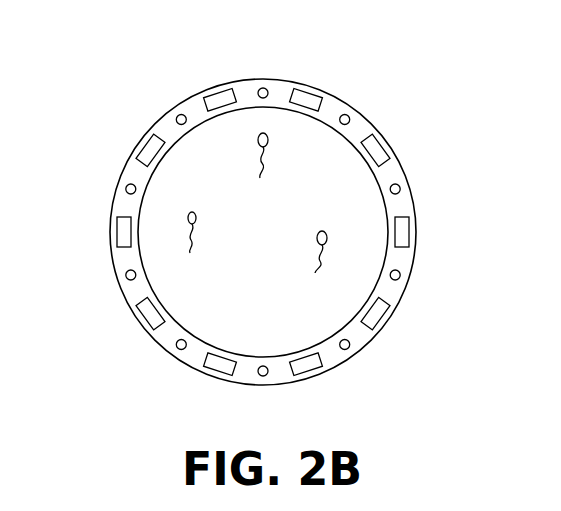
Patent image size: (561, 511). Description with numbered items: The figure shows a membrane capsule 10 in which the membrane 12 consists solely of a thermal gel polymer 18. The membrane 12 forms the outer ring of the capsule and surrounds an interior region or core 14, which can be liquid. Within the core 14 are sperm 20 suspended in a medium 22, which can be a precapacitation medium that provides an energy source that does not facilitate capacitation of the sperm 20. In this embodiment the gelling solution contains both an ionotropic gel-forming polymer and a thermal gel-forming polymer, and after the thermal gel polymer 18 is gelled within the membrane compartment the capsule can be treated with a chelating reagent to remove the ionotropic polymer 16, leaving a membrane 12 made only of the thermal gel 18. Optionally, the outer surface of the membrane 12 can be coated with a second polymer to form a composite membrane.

The membrane capsule 10 is at (353, 80).
The membrane 12 is at (377, 125).
The core 14 is at (323, 318).
The ionotropic polymer 16 is at (400, 183).
The thermal gel polymer 18 is at (407, 225).
The sperm 20 is at (187, 221).
The medium 22 is at (357, 258).